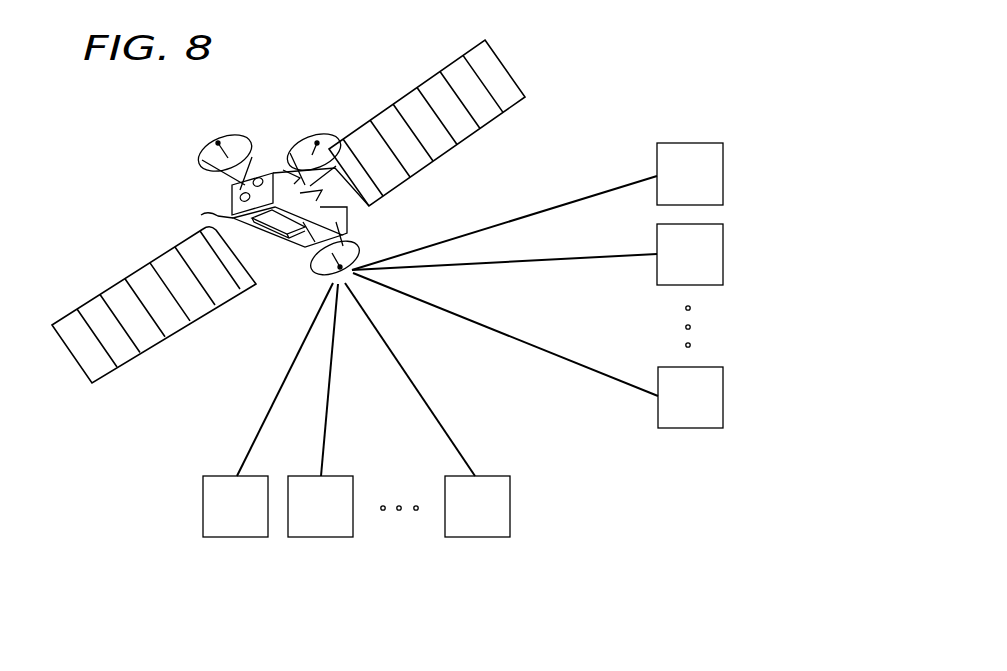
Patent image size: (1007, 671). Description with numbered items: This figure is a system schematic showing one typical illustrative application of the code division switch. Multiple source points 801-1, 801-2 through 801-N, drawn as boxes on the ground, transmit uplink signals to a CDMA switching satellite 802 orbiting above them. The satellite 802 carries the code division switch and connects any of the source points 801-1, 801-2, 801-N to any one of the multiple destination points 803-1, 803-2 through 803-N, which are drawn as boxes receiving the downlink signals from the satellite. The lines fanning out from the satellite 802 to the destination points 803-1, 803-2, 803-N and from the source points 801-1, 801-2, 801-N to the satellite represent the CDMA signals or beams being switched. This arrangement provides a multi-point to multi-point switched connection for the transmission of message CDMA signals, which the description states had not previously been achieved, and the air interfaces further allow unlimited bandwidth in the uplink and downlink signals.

The CDMA switching satellite 802 is at (259, 178).
The destination point 803-1 is at (723, 176).
The destination point 803-2 is at (723, 252).
The destination point 803-N is at (723, 386).
The source point 801-1 is at (202, 534).
The source point 801-2 is at (320, 540).
The source point 801-N is at (468, 540).